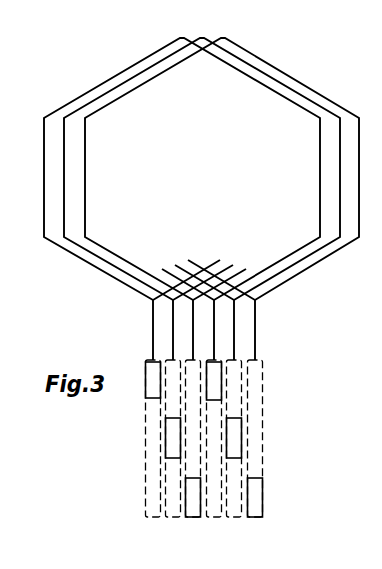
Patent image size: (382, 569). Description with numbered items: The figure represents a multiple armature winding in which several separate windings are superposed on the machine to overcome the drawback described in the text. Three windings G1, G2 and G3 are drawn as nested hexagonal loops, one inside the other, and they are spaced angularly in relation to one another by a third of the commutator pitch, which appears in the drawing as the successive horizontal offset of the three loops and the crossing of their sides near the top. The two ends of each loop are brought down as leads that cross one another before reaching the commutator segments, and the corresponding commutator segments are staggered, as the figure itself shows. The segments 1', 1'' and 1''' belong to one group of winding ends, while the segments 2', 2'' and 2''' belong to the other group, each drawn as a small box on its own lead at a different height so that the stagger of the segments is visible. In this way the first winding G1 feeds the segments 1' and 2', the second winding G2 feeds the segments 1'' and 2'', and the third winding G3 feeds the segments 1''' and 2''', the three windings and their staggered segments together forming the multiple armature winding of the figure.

The first winding G1 is at (158, 50).
The second winding G2 is at (197, 40).
The third winding G3 is at (242, 49).
The commutator segment 1' is at (153, 438).
The commutator segment 1'' is at (173, 438).
The first terminal of third winding 1''' is at (193, 438).
The commutator segment 2' is at (214, 438).
The commutator segment 2'' is at (234, 438).
The second terminal of third winding 2''' is at (255, 438).